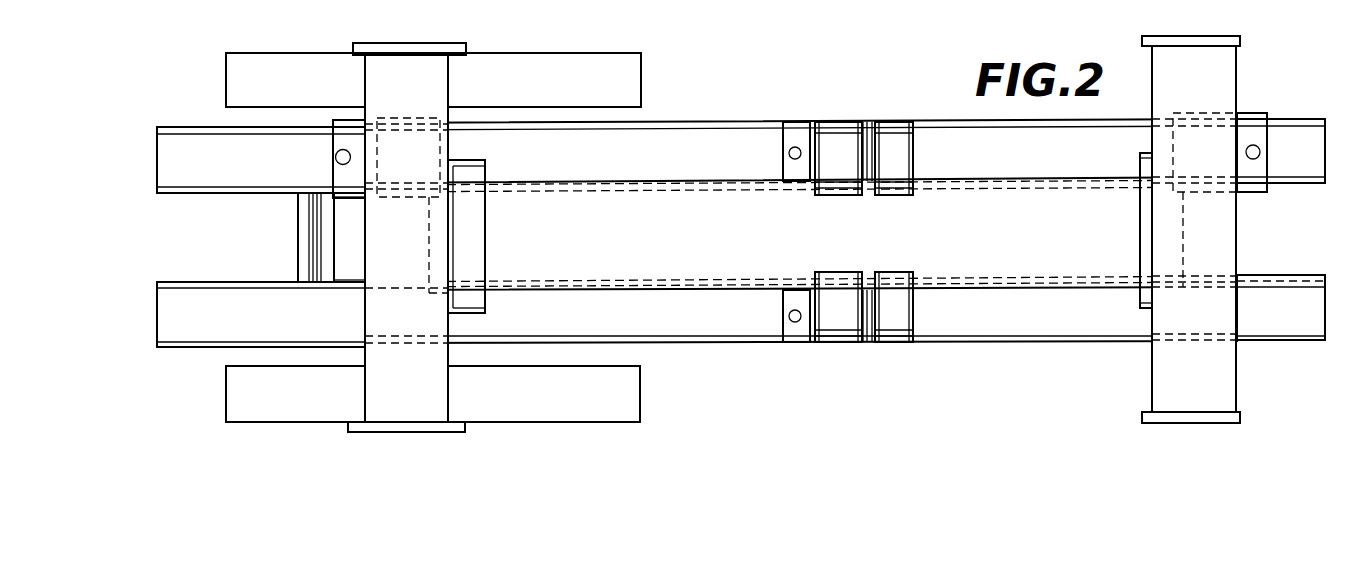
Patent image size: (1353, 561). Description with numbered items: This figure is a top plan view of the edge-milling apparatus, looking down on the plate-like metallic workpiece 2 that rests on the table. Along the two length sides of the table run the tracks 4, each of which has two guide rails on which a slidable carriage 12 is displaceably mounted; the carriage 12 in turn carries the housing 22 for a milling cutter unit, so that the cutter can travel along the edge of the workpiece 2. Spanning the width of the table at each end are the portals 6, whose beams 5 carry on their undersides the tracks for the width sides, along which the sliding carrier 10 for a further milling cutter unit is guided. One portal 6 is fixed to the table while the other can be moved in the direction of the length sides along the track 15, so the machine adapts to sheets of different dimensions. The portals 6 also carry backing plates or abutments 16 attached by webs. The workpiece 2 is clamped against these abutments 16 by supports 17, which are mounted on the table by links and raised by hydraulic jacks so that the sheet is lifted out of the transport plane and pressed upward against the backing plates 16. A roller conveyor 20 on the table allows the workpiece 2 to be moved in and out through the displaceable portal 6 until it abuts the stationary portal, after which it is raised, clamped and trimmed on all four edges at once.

The workpiece 2 is at (958, 245).
The track 4 is at (706, 137).
The beam 5 is at (387, 251).
The portal 6 is at (352, 401).
The sliding carrier 10 is at (343, 142).
The slidable carriage 12 is at (797, 330).
The track 15 is at (615, 73).
The backing plate 16 is at (465, 242).
The support 17 is at (312, 220).
The roller conveyor 20 is at (307, 267).
The housing 22 is at (837, 143).